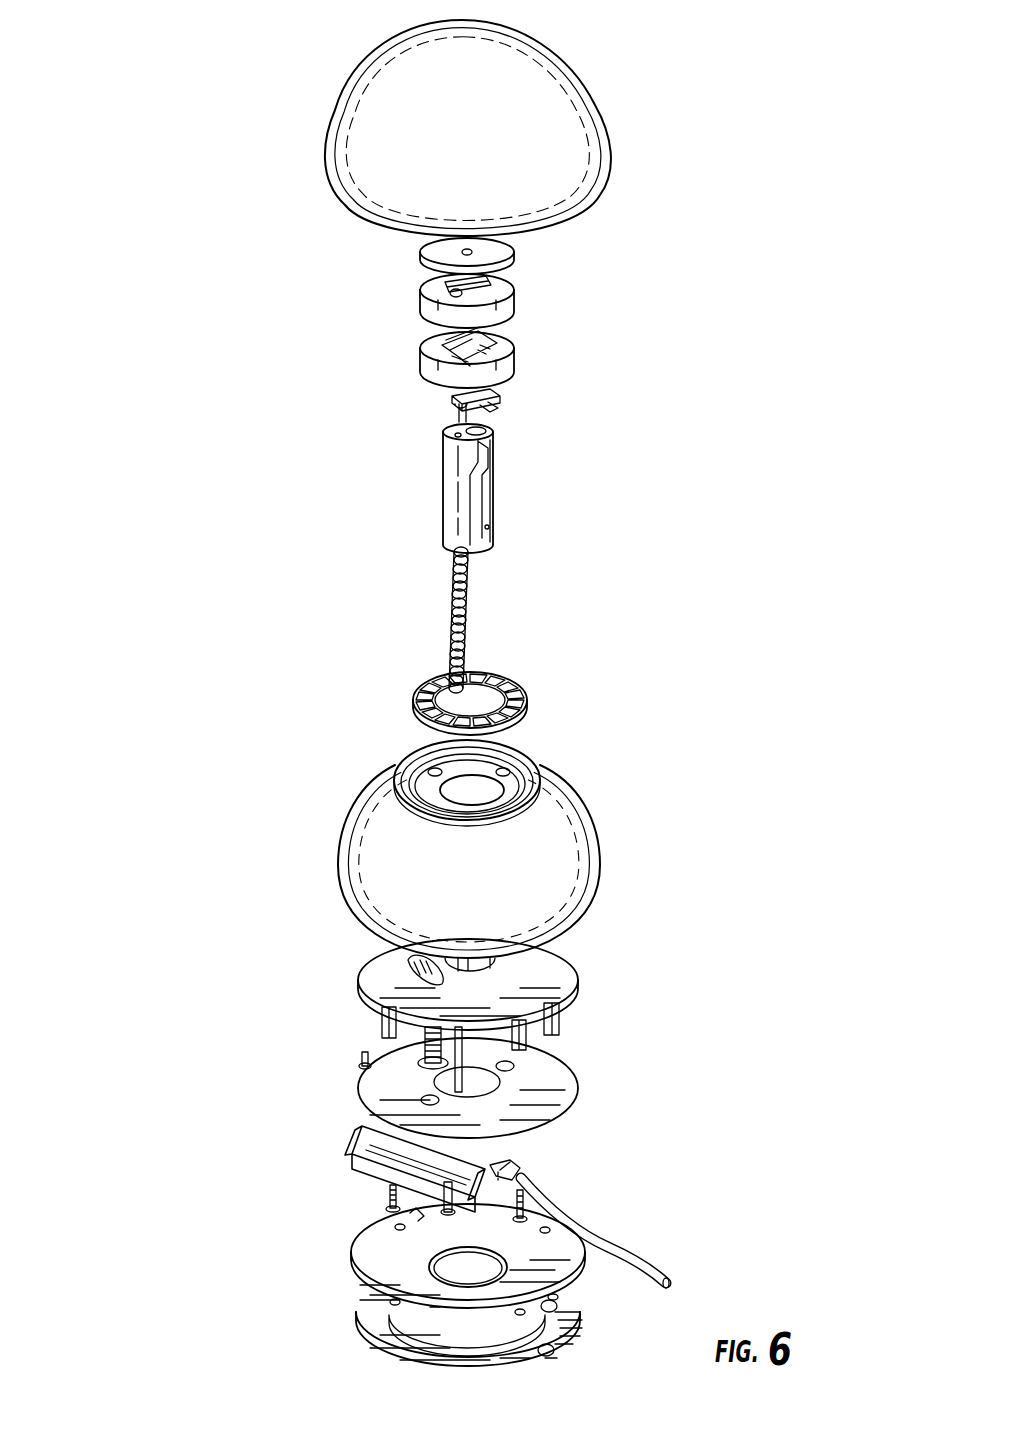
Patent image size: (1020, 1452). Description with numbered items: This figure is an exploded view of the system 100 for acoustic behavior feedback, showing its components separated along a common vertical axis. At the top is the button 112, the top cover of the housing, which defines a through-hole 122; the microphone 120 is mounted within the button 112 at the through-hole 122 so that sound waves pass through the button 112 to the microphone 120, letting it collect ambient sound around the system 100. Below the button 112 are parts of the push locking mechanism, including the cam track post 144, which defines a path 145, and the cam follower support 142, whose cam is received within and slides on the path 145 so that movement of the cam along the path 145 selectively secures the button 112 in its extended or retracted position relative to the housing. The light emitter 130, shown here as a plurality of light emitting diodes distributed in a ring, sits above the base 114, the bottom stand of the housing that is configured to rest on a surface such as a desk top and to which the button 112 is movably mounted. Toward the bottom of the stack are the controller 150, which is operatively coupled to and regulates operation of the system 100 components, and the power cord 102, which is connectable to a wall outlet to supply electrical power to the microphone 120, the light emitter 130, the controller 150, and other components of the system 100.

The system 100 is at (185, 55).
The button 112 is at (352, 110).
The through-hole 122 is at (572, 80).
The microphone 120 is at (490, 331).
The path 145 is at (526, 482).
The cam track post 144 is at (490, 451).
The light emitter 130 is at (500, 678).
The base 114 is at (578, 852).
The cam follower support 142 is at (458, 965).
The controller 150 is at (405, 1158).
The power cord 102 is at (642, 1255).